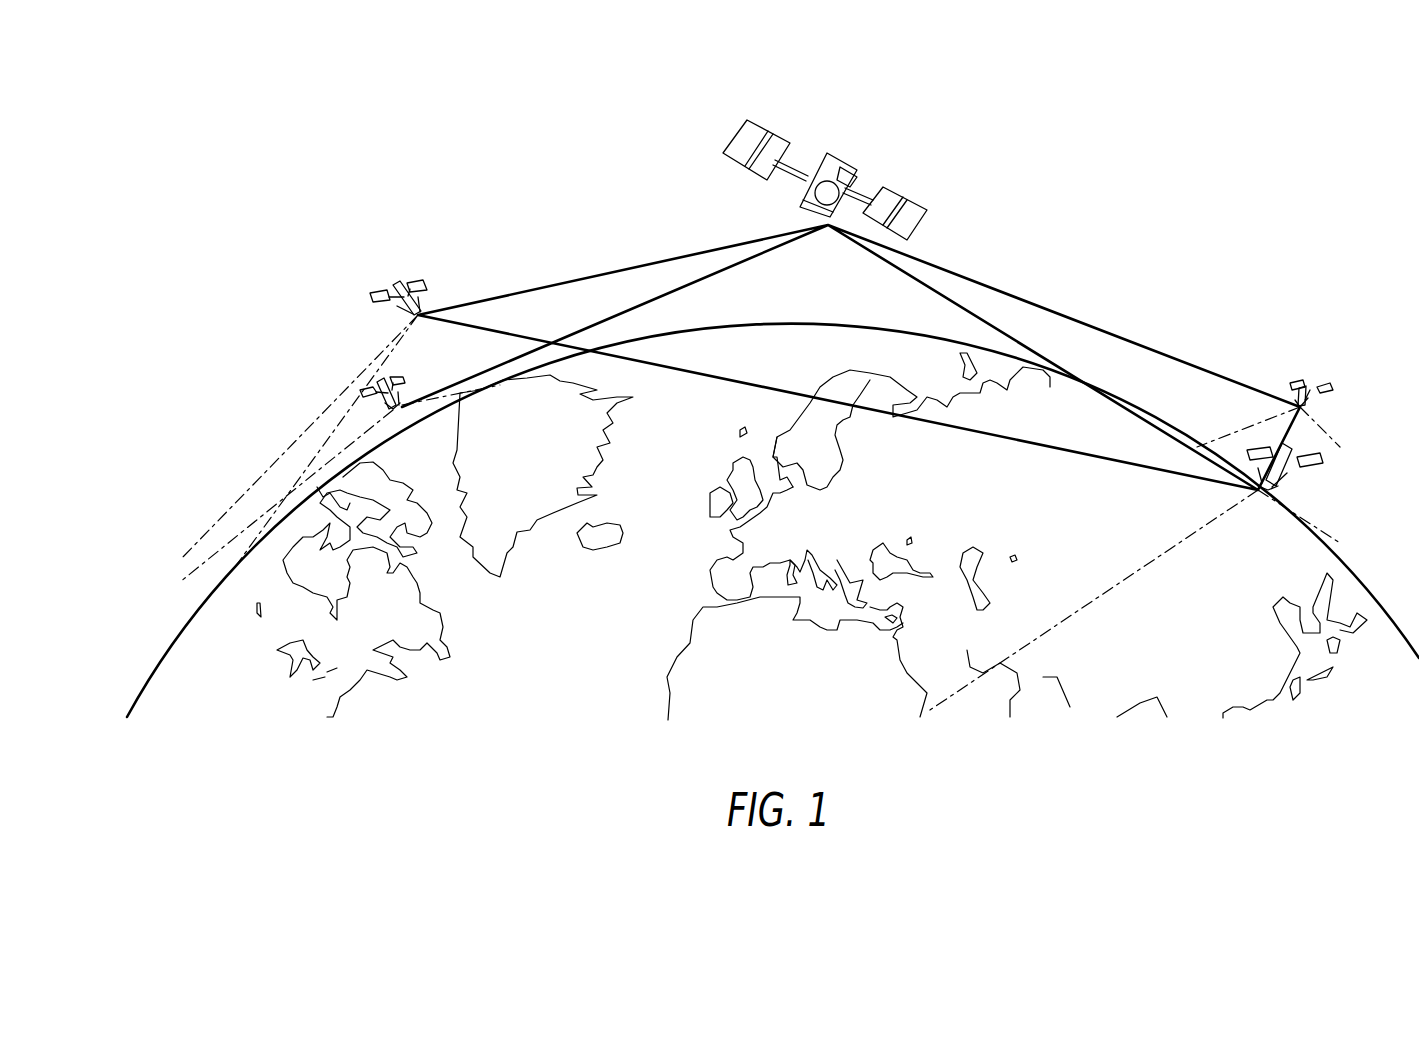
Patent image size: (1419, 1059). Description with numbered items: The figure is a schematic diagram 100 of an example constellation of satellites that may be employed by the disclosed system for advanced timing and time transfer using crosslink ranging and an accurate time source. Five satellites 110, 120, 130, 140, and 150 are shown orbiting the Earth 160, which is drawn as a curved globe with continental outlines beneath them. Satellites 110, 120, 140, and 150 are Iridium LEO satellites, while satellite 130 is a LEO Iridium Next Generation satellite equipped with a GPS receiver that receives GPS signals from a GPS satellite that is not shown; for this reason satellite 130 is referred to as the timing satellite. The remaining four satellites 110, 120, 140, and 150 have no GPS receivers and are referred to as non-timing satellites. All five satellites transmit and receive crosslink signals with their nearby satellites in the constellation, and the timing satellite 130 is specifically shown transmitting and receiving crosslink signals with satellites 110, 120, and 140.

The schematic diagram 100 is at (1242, 268).
The satellite 110 is at (380, 385).
The satellite 120 is at (400, 283).
The timing satellite 130 is at (832, 153).
The satellite 140 is at (1313, 383).
The satellite 150 is at (1322, 463).
The Earth 160 is at (543, 718).